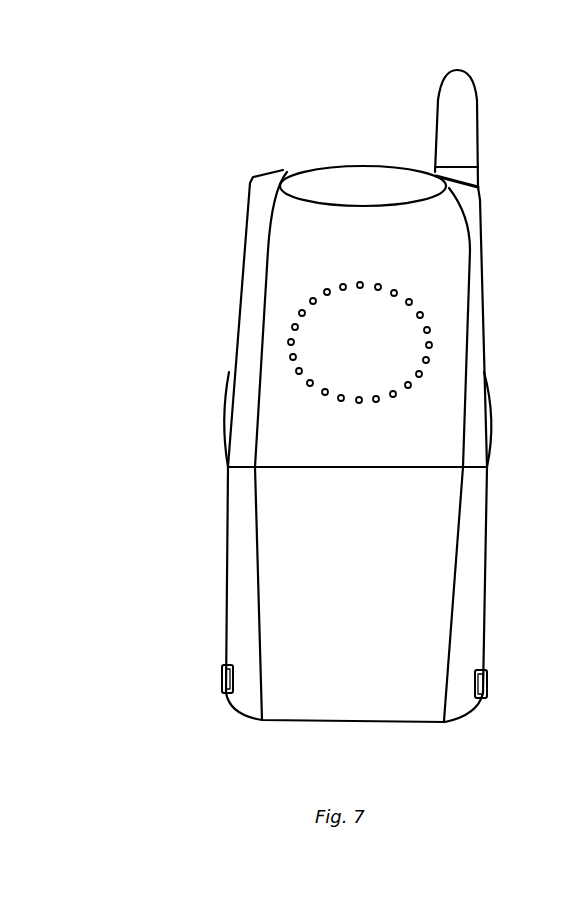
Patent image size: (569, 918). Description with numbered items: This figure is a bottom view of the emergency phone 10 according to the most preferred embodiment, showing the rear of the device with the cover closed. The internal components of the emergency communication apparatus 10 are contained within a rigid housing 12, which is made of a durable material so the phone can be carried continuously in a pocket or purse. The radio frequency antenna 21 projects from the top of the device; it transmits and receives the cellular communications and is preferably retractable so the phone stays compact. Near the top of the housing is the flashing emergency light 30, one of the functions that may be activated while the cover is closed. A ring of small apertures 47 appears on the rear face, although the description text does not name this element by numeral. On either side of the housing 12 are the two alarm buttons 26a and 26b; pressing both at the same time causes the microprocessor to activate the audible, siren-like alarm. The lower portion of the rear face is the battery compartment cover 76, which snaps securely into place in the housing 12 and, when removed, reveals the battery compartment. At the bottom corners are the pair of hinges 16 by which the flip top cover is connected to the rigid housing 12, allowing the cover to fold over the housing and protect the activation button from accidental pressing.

The emergency communication apparatus 10 is at (172, 191).
The rigid housing 12 is at (238, 249).
The flashing emergency light 30 is at (294, 168).
The radio frequency antenna 21 is at (478, 110).
The speaker apertures 47 is at (430, 330).
The alarm button 26a is at (495, 408).
The alarm button 26b is at (223, 408).
The battery compartment cover 76 is at (487, 552).
The hinges 16 is at (222, 677).